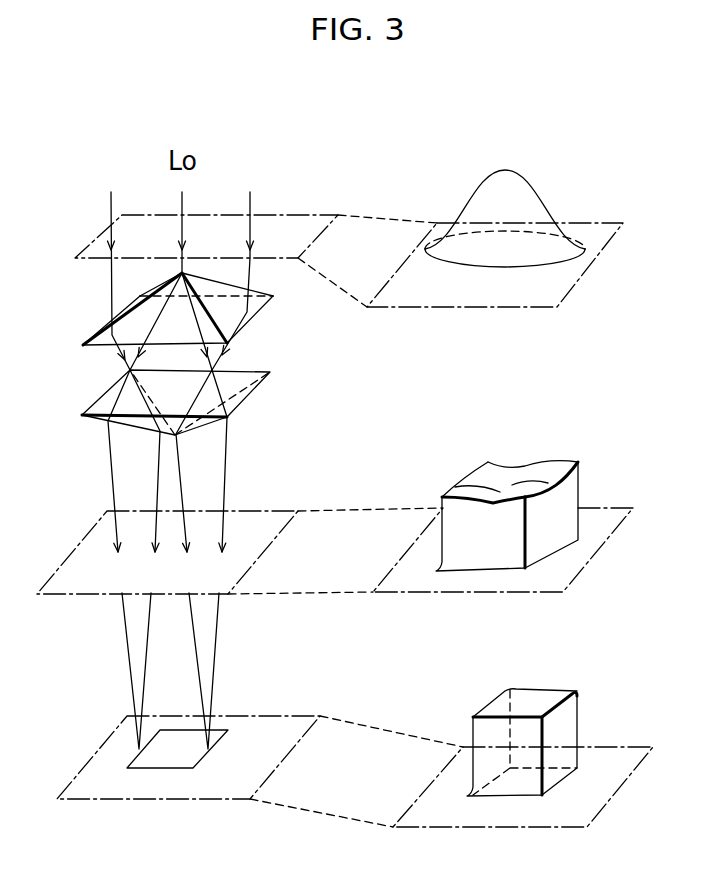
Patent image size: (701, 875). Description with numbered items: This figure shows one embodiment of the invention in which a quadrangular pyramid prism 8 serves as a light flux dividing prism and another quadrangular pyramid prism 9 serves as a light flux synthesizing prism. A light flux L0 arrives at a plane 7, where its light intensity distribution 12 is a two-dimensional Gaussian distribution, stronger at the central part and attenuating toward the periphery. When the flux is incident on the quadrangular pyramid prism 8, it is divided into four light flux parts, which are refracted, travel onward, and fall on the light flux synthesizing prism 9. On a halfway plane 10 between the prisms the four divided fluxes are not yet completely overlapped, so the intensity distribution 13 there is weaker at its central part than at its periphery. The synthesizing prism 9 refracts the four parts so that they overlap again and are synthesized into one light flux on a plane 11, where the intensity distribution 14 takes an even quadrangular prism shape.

The plane 7 is at (300, 237).
The quadrangular pyramid prism 8 is at (252, 305).
The quadrangular pyramid prism 9 is at (240, 380).
The halfway plane 10 is at (257, 542).
The plane 11 is at (275, 750).
The light intensity distribution 12 is at (475, 195).
The light intensity distribution 13 is at (442, 495).
The light intensity distribution 14 is at (473, 722).